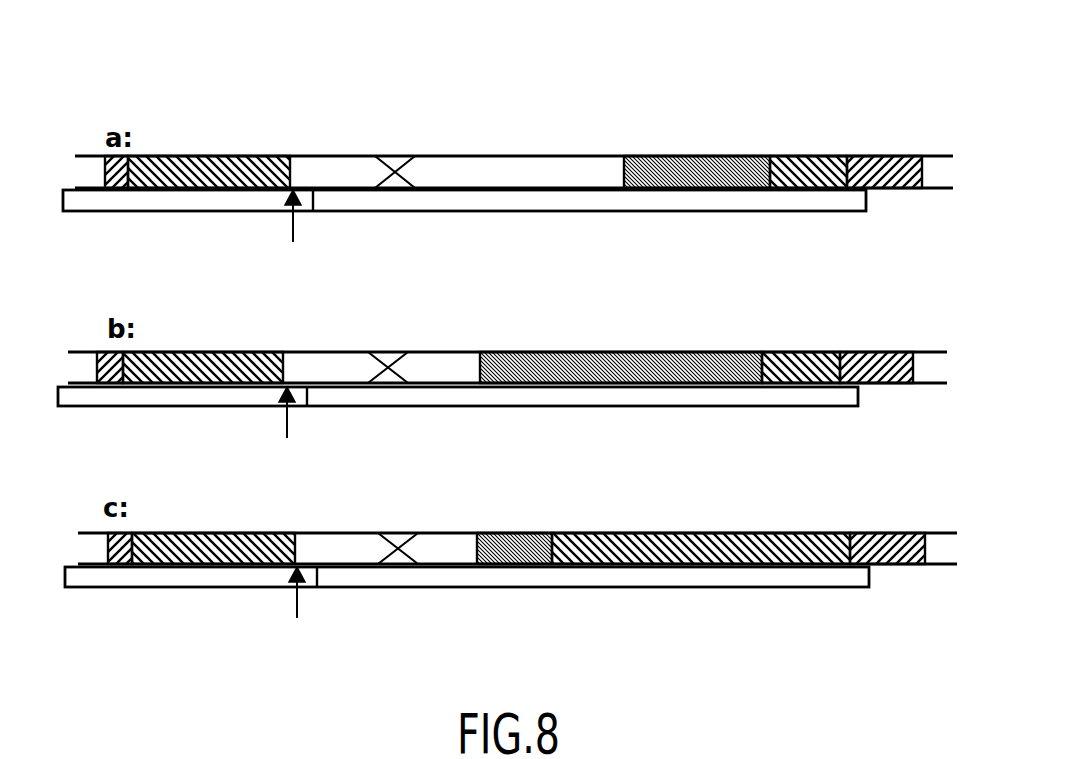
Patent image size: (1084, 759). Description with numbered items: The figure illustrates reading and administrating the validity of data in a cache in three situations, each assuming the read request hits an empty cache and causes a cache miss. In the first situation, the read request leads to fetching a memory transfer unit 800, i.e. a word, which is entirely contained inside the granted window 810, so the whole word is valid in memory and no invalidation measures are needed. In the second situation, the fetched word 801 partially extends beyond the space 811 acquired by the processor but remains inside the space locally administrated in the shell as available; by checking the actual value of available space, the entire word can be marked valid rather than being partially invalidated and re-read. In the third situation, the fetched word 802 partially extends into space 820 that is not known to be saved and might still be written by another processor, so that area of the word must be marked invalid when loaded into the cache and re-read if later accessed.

The granted window 810 is at (467, 156).
The memory transfer unit 800 is at (503, 208).
The space acquired by the processor 811 is at (417, 352).
The fetched word 801 is at (468, 405).
The space not known to be saved 820 is at (740, 533).
The fetched word 802 is at (508, 590).